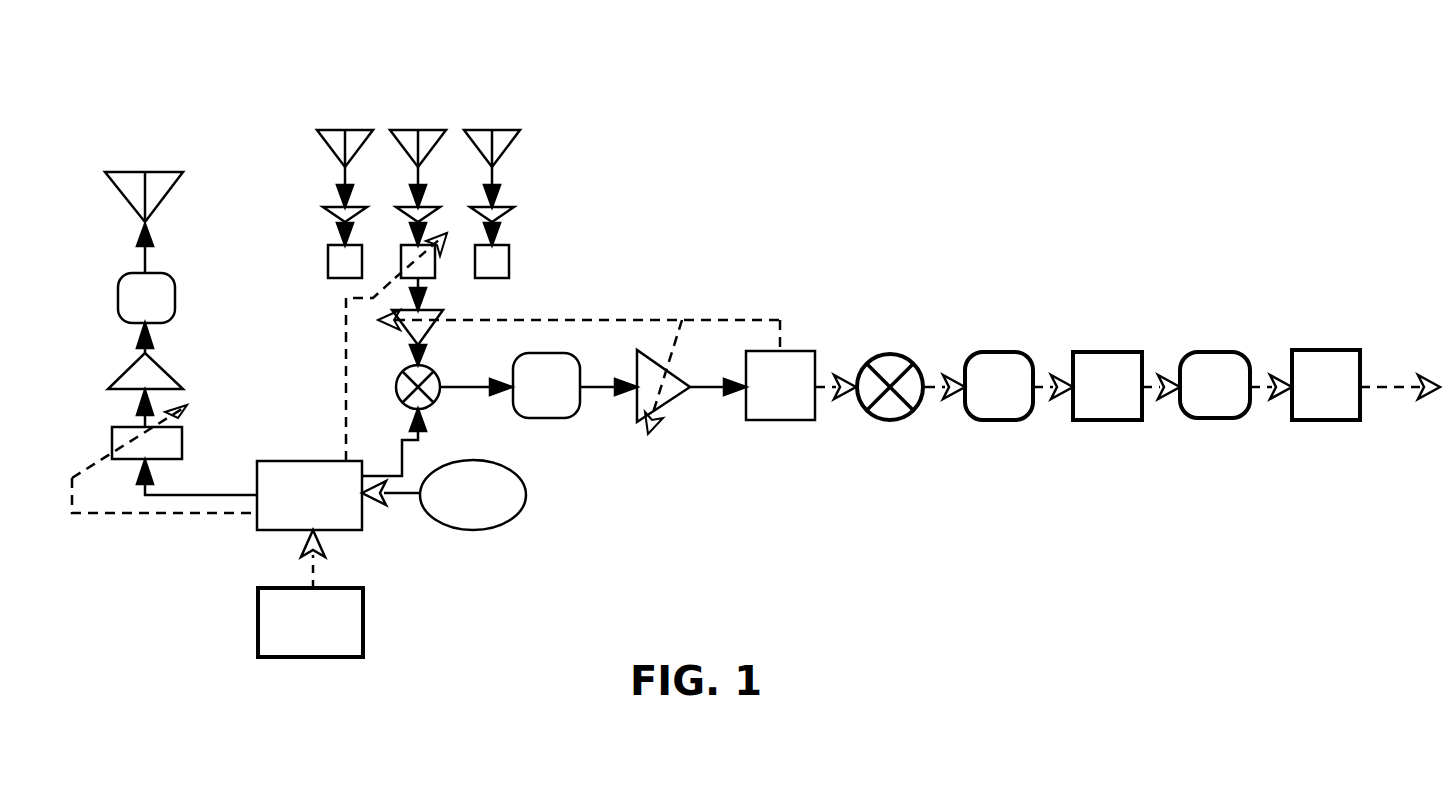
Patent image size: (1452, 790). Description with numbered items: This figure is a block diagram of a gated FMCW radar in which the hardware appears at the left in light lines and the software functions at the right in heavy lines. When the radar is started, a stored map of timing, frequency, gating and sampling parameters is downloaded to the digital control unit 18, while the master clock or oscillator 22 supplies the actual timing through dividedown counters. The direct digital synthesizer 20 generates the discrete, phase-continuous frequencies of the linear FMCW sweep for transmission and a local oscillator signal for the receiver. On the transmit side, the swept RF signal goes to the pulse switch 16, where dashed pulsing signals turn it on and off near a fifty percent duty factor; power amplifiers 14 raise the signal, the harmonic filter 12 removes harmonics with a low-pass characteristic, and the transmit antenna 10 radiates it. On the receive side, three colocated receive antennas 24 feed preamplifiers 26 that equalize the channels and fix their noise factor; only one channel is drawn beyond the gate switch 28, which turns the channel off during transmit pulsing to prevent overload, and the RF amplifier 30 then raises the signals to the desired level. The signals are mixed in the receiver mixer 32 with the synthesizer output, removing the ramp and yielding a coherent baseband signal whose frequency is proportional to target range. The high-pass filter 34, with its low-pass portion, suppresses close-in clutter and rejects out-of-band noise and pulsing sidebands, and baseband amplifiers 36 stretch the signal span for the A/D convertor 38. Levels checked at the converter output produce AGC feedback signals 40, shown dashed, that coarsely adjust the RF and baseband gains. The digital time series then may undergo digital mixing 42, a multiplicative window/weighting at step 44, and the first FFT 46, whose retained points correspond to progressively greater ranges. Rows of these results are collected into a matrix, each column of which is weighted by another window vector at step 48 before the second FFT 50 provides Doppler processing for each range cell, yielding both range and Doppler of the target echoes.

The transmit antenna 10 is at (128, 172).
The harmonic filter 12 is at (120, 275).
The power amplifiers 14 is at (125, 370).
The pulse switch 16 is at (112, 427).
The digital control unit 18 is at (363, 657).
The direct digital synthesizer 20 is at (362, 530).
The master clock or oscillator 22 is at (490, 528).
The receive antennas 24 is at (483, 130).
The preamplifiers 26 is at (438, 208).
The gate switch 28 is at (438, 258).
The RF amplifier 30 is at (440, 312).
The receiver mixer 32 is at (442, 398).
The high-pass filter 34 is at (575, 418).
The baseband amplifiers 36 is at (672, 402).
The A/D convertor 38 is at (815, 420).
The AGC feedback signals 40 is at (665, 319).
The digital mixing 42 is at (912, 412).
The window/weighting step 44 is at (1028, 418).
The first FFT 46 is at (1142, 420).
The matrix window/weighting 48 is at (1245, 415).
The second FFT 50 is at (1290, 350).